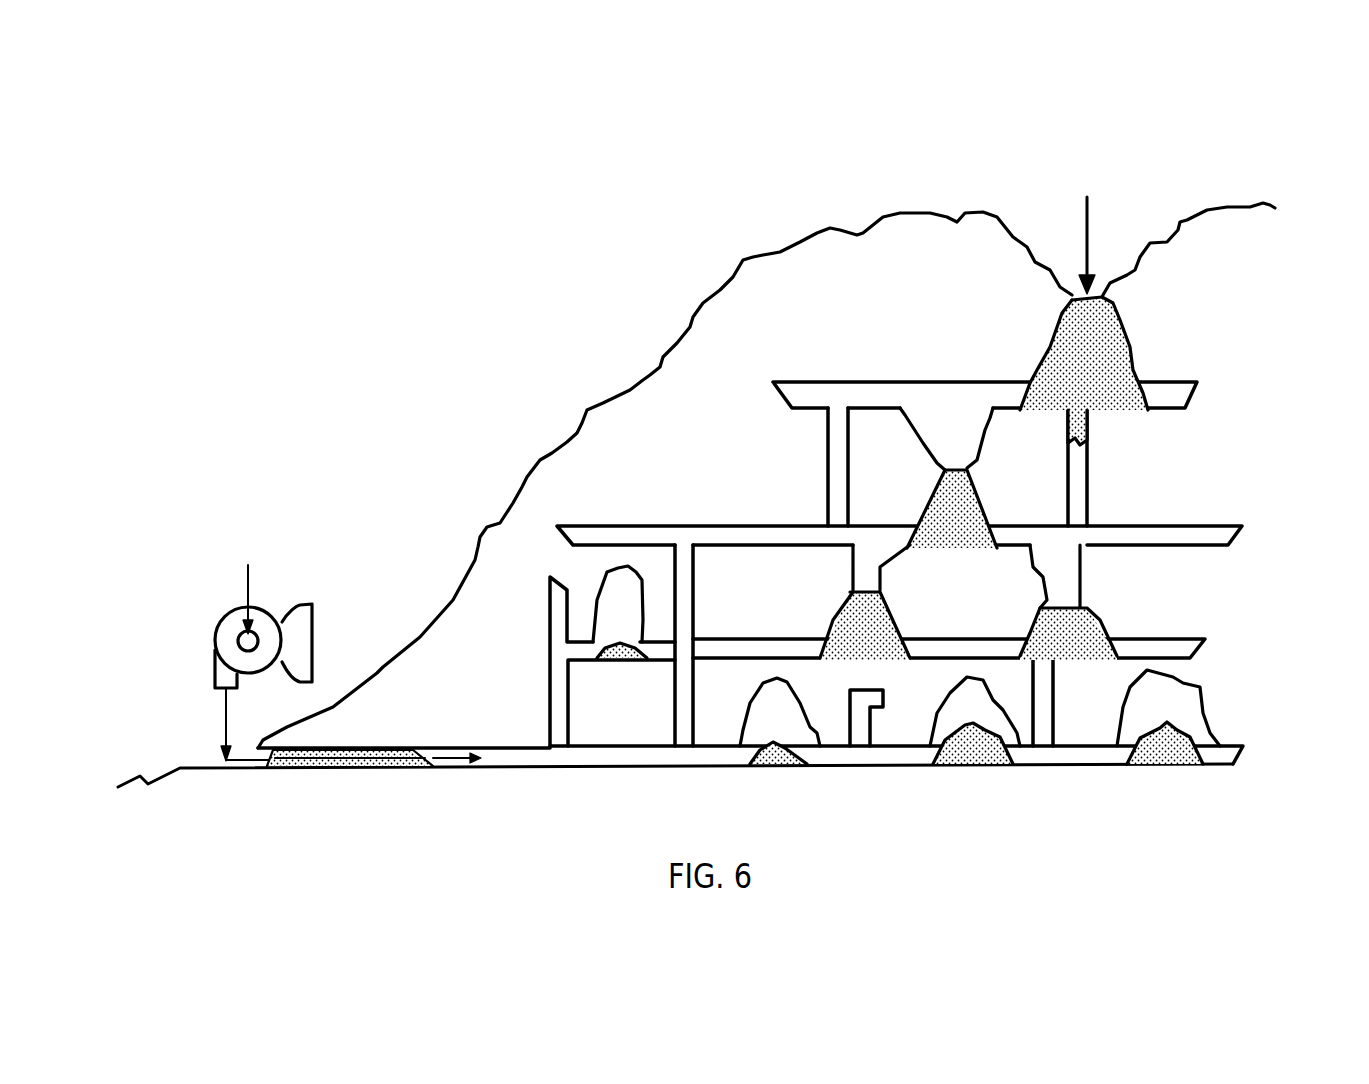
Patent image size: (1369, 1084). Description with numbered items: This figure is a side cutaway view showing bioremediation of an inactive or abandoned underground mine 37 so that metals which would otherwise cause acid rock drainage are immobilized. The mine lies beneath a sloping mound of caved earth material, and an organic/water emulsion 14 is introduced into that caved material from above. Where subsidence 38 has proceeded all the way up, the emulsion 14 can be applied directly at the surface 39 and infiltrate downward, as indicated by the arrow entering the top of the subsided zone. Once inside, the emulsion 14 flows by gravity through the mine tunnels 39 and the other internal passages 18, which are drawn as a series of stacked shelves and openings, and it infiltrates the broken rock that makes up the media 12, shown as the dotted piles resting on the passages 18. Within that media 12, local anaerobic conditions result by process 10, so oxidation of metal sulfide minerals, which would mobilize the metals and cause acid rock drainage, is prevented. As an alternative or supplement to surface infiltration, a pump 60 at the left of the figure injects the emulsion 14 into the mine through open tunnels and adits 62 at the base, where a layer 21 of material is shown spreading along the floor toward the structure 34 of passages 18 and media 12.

The process 10 is at (1228, 181).
The media 12 is at (1117, 360).
The organic/water emulsion 14 is at (1092, 217).
The internal passages 18 is at (942, 392).
The sediment layer 21 is at (337, 772).
The sediment trap structure 34 is at (896, 523).
The underground mine 37 is at (830, 255).
The subsidence 38 is at (1103, 314).
The surface 39 is at (1100, 296).
The pump 60 is at (215, 674).
The adits 62 is at (244, 787).